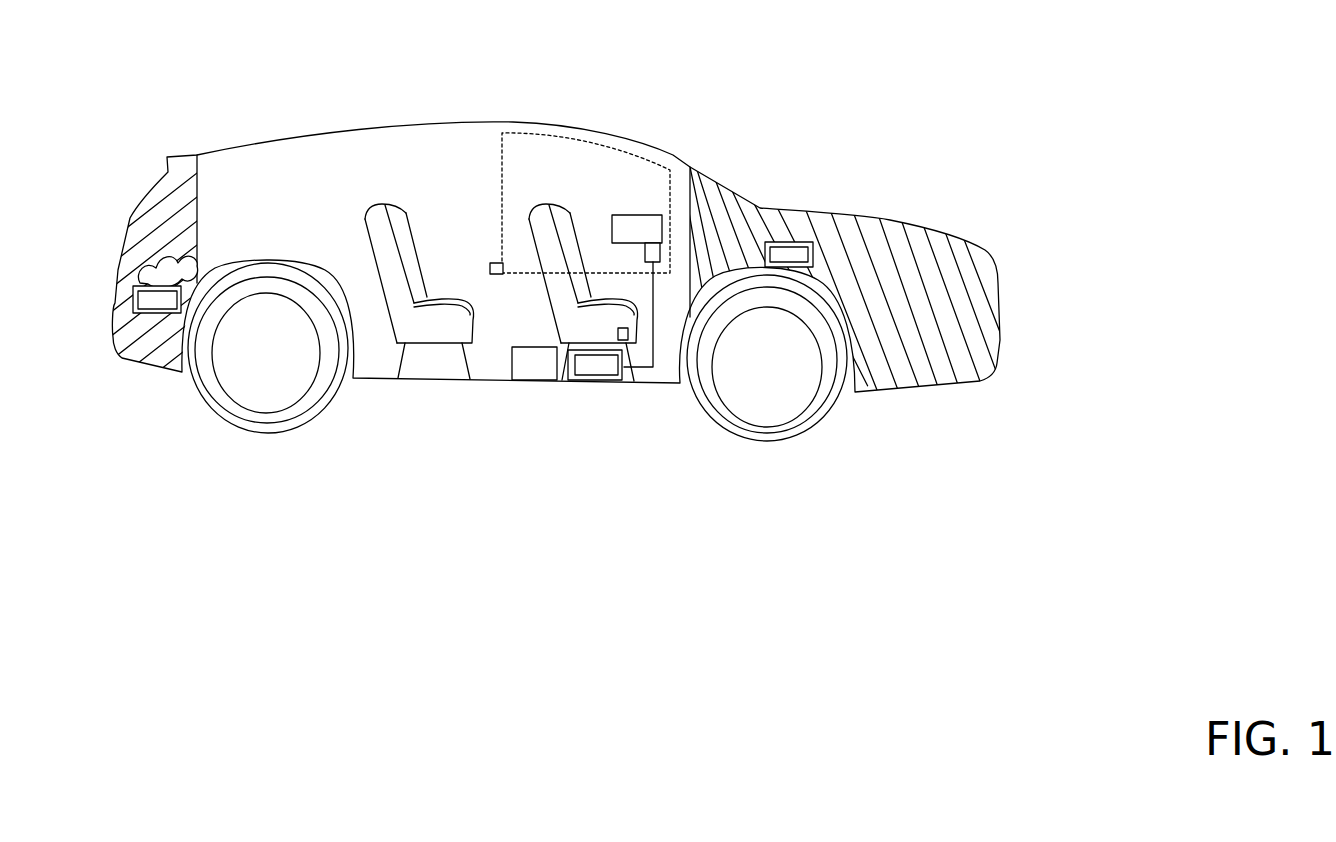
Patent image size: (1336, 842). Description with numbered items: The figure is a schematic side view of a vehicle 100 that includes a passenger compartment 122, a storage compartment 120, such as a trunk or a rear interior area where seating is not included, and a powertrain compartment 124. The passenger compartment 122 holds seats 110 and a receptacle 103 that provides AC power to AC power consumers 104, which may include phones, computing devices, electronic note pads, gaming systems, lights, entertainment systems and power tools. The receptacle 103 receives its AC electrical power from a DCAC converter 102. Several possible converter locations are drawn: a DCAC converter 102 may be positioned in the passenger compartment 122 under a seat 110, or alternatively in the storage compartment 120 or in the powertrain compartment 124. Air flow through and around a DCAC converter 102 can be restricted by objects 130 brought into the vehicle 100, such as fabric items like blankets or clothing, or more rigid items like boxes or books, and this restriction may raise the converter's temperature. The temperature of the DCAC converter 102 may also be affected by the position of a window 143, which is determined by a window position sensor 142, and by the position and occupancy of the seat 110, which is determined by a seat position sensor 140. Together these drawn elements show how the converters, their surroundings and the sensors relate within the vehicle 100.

The vehicle 100 is at (178, 79).
The DCAC converter 102 is at (473, 310).
The receptacle 103 is at (646, 258).
The AC power consumers 104 is at (637, 228).
The seat 110 is at (552, 299).
The storage compartment 120 is at (127, 263).
The passenger compartment 122 is at (480, 188).
The powertrain compartment 124 is at (980, 253).
The objects restricting air flow 130 is at (222, 247).
The seat position sensor 140 is at (618, 333).
The window position sensor 142 is at (490, 266).
The window 143 is at (502, 152).